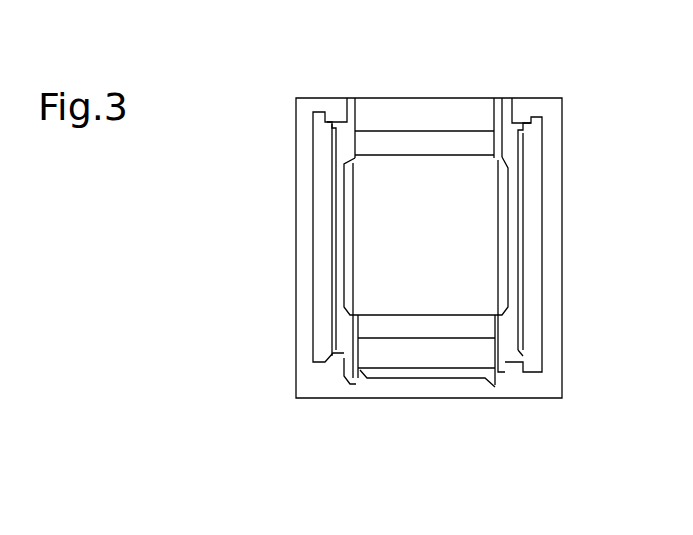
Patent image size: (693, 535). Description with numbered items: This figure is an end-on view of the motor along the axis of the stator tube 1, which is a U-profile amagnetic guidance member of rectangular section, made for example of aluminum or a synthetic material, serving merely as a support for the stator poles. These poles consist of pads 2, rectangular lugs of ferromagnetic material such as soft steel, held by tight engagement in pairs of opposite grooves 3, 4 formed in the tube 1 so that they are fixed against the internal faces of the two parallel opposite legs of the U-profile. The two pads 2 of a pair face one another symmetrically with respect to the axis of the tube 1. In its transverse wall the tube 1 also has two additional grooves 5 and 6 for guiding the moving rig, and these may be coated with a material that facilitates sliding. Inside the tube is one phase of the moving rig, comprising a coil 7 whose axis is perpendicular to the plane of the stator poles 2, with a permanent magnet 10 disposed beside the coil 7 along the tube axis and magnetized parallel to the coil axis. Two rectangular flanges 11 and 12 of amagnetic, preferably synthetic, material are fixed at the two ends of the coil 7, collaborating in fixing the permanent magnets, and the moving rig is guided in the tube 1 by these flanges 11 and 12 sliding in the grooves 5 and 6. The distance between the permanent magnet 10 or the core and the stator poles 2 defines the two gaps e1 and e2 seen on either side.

The stator tube 1 is at (300, 143).
The pads 2 is at (323, 200).
The grooves 3 is at (320, 112).
The grooves 4 is at (317, 376).
The groove 5 is at (354, 386).
The groove 6 is at (495, 388).
The coil 7 is at (403, 114).
The permanent magnet 10 is at (447, 188).
The flange 11 is at (358, 324).
The flange 12 is at (500, 333).
The gap e1 is at (337, 258).
The gap e2 is at (513, 257).